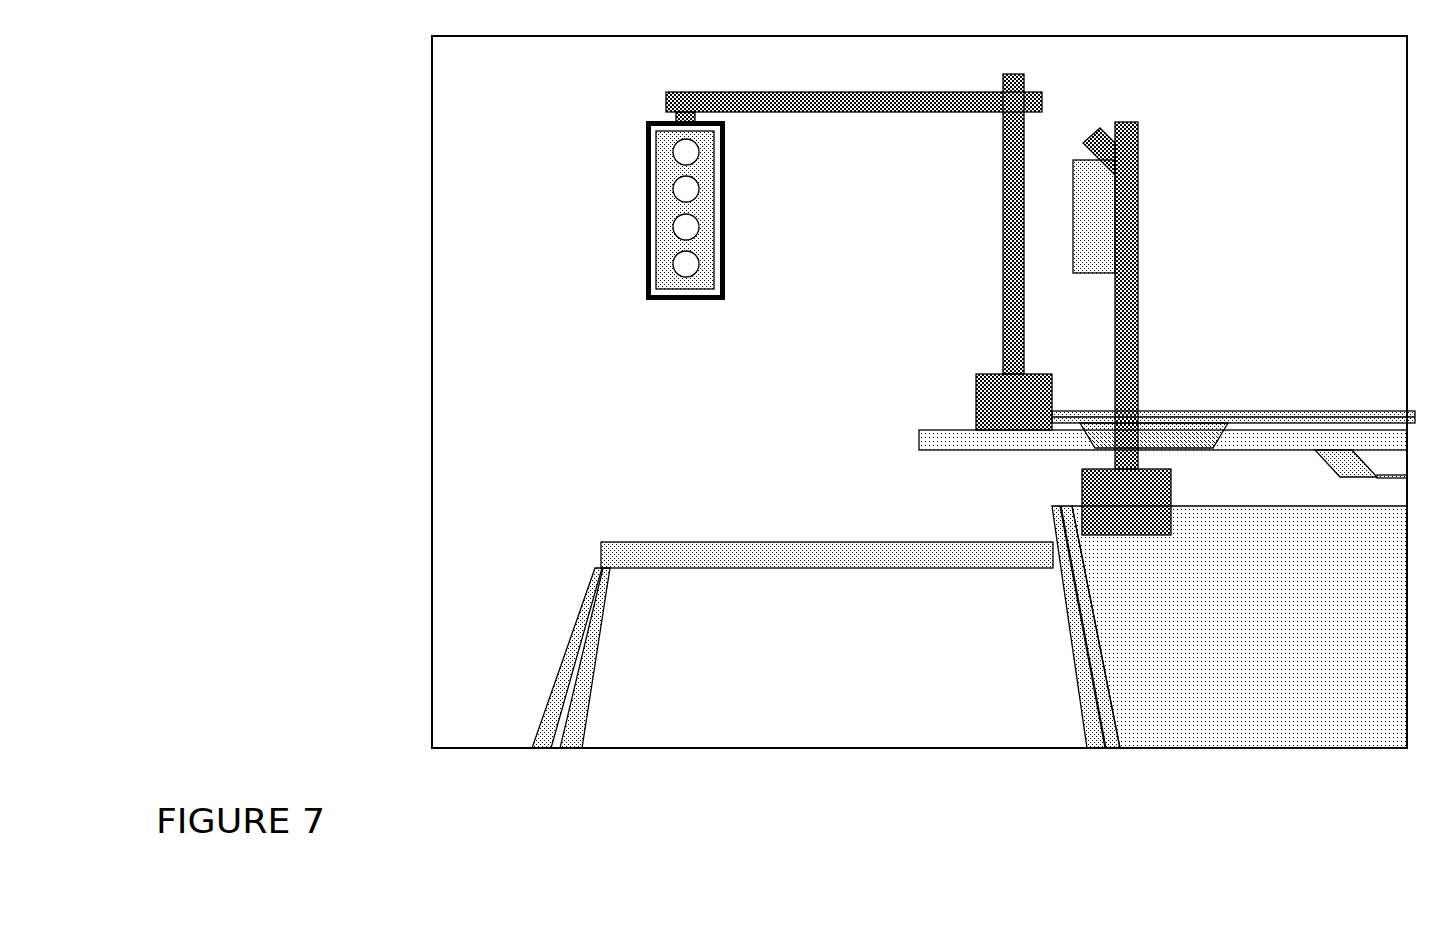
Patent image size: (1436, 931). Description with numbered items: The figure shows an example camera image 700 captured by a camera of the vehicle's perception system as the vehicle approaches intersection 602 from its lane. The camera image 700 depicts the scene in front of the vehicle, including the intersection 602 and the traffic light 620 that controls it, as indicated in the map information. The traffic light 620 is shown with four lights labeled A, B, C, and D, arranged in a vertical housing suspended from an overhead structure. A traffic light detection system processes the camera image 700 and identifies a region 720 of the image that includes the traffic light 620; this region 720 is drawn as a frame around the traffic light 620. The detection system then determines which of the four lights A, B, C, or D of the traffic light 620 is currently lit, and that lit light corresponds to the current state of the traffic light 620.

The camera image 700 is at (432, 77).
The intersection 602 is at (859, 494).
The traffic light 620 is at (646, 205).
The region 720 is at (725, 208).